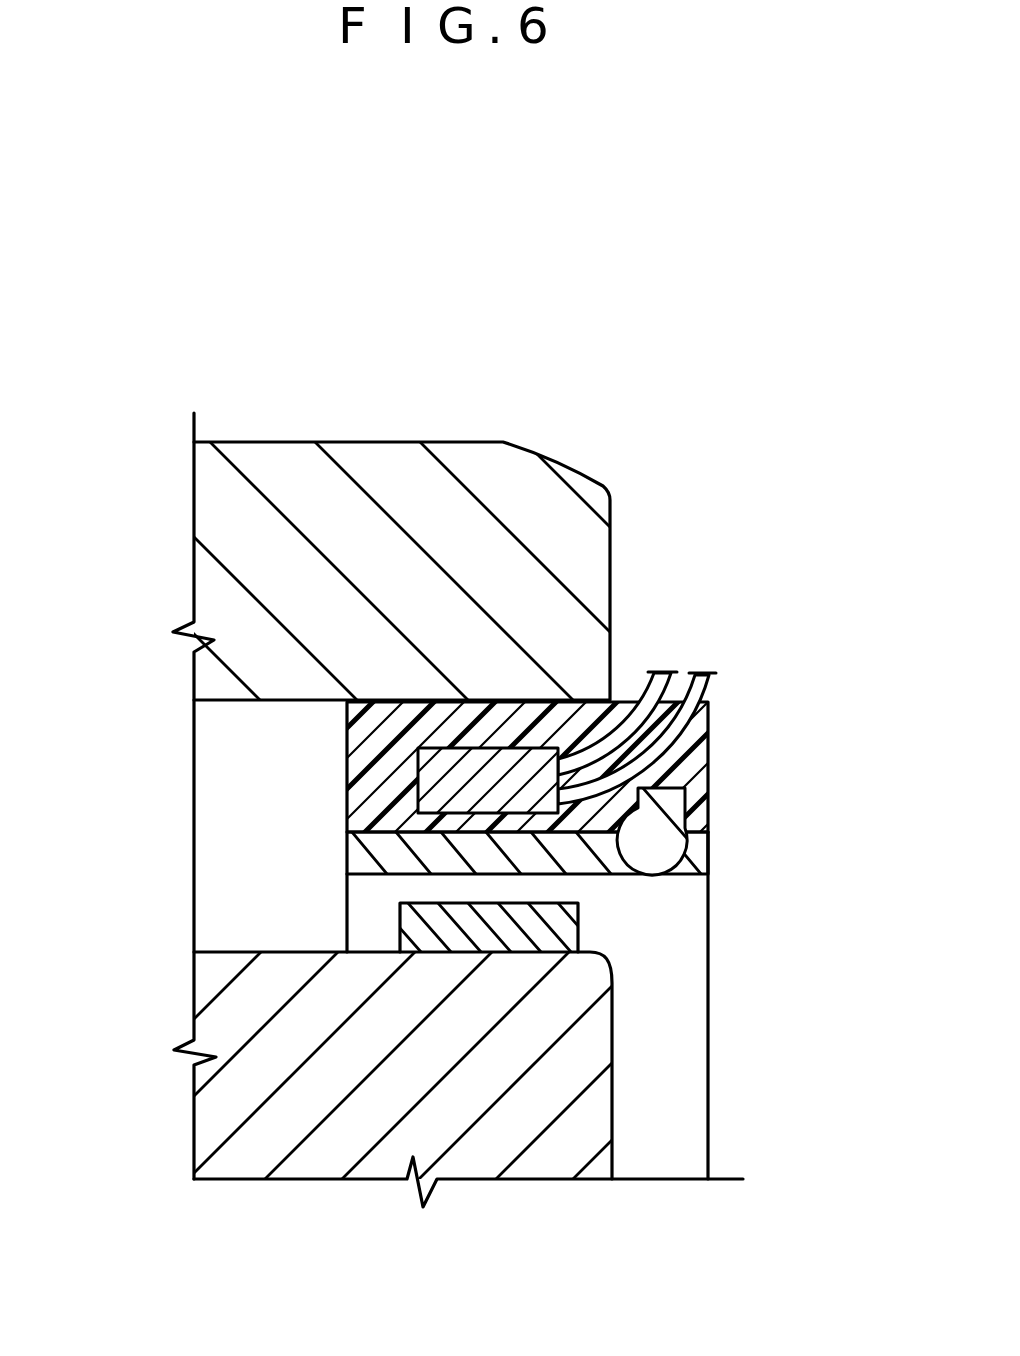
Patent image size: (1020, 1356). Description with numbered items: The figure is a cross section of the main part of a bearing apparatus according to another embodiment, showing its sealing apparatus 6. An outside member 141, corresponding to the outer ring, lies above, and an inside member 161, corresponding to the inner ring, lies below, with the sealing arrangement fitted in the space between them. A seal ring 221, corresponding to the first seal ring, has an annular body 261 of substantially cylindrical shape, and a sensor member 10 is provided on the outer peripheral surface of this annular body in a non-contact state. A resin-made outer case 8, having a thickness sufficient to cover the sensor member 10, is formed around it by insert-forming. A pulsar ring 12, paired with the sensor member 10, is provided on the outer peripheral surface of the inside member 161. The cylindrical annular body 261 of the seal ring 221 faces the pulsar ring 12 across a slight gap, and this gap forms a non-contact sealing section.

The outside member 141 is at (263, 452).
The sealing apparatus 6 is at (380, 699).
The outer case 8 is at (437, 710).
The sensor member 10 is at (425, 791).
The seal ring 221 is at (721, 737).
The annular body 261 is at (686, 826).
The pulsar ring 12 is at (578, 937).
The inside member 161 is at (367, 1160).